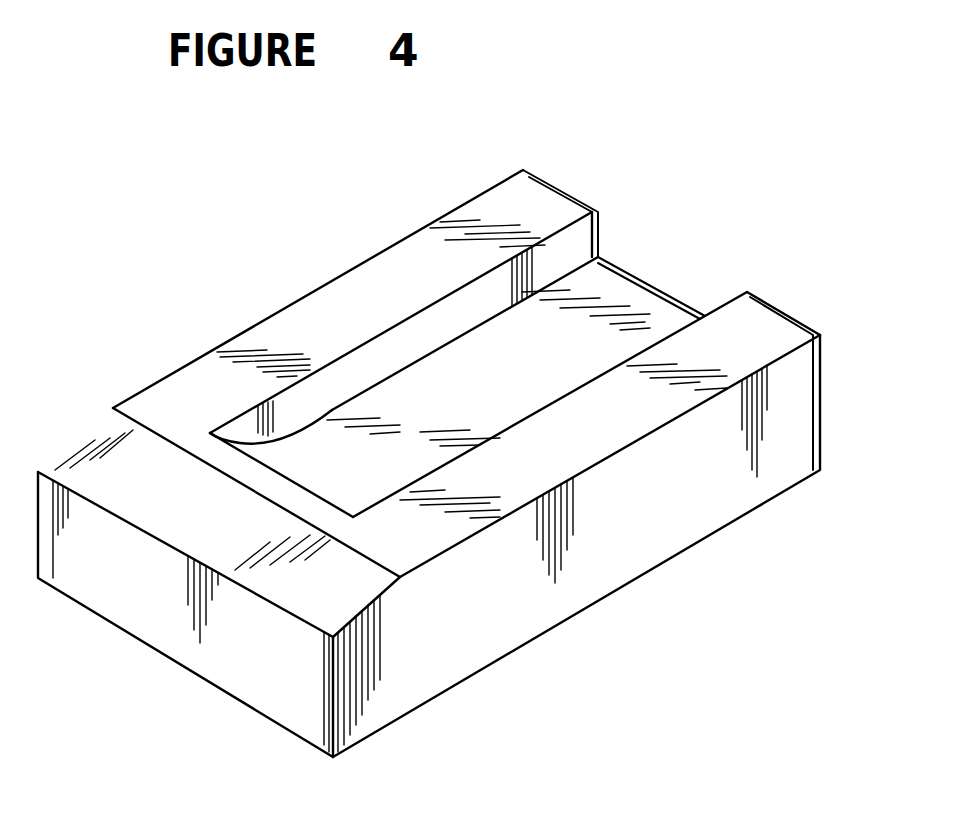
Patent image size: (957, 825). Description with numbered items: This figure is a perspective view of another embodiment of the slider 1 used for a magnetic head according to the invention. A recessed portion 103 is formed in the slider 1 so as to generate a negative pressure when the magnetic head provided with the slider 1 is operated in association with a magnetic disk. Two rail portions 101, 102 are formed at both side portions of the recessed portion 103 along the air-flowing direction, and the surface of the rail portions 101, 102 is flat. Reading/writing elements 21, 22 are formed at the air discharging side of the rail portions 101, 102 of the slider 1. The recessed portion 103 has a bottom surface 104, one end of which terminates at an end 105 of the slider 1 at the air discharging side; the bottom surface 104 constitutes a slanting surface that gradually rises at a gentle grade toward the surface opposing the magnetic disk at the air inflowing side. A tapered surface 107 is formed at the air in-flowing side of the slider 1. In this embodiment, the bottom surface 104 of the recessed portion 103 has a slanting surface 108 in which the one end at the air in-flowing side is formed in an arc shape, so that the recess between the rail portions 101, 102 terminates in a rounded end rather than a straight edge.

The slider 1 is at (465, 658).
The reading/writing element 21 is at (557, 186).
The reading/writing element 22 is at (780, 311).
The rail portion 101 is at (360, 323).
The rail portion 102 is at (625, 413).
The recessed portion 103 is at (473, 362).
The bottom surface 104 is at (575, 302).
The end of the slider 105 is at (678, 297).
The tapered surface 107 is at (113, 467).
The slanting surface 108 is at (305, 460).